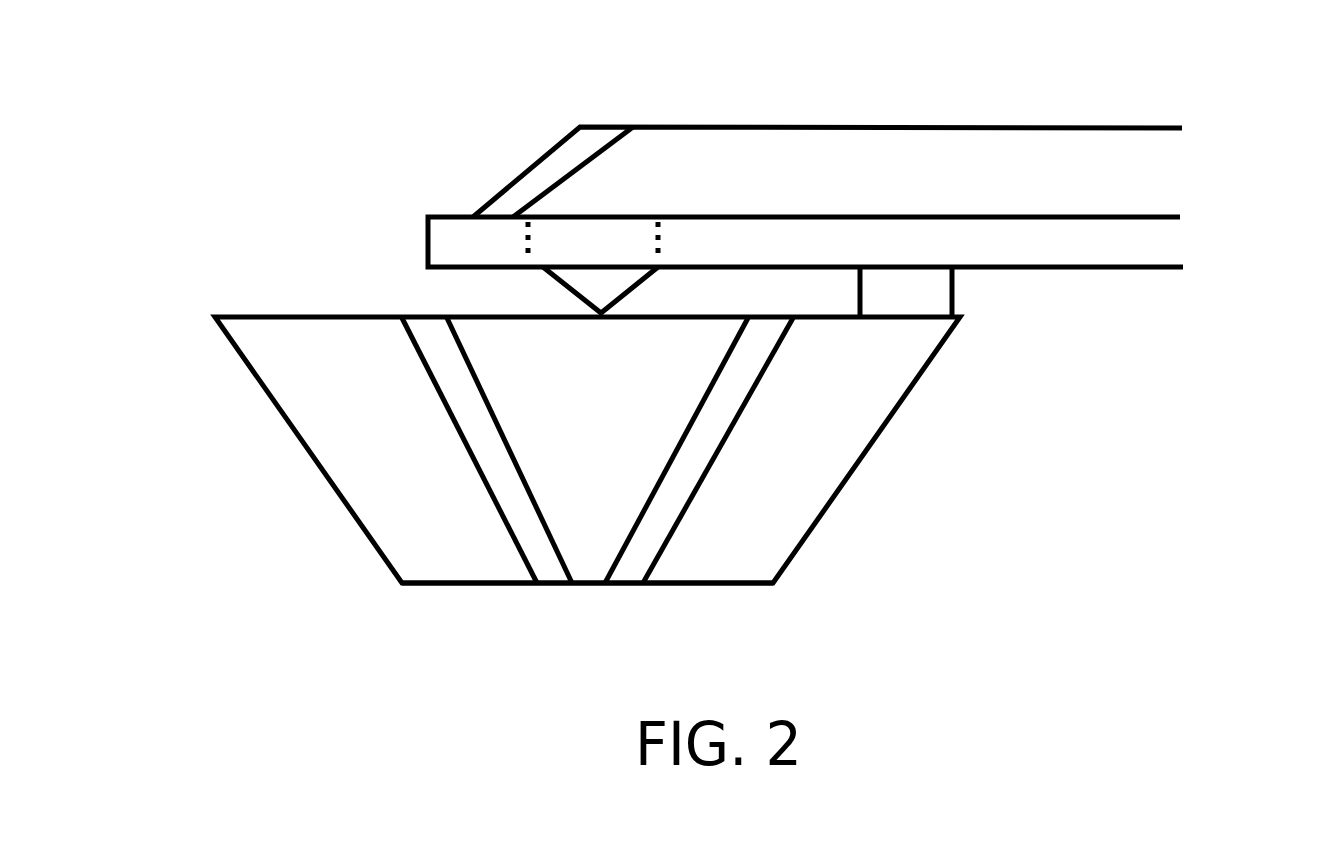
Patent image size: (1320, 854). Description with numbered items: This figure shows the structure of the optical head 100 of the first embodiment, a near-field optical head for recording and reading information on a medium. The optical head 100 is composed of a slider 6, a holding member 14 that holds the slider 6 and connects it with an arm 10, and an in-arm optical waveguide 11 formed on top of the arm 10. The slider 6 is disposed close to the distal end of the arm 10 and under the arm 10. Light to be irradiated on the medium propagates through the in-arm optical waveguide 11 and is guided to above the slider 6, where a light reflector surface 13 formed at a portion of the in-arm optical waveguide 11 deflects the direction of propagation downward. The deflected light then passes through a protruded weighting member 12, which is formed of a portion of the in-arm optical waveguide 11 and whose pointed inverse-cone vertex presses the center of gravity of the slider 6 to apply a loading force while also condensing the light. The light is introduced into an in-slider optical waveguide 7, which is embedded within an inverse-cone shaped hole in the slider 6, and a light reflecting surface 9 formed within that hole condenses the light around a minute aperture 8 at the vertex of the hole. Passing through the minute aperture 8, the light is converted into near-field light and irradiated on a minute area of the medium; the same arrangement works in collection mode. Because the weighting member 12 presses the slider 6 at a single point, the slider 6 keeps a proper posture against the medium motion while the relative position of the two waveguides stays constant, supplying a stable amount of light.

The optical head 100 is at (698, 354).
The slider 6 is at (387, 477).
The in-slider optical waveguide 7 is at (602, 412).
The minute aperture 8 is at (590, 585).
The light reflecting surface 9 is at (662, 507).
The arm 10 is at (1102, 240).
The in-arm optical waveguide 11 is at (1045, 143).
The weighting member 12 is at (590, 288).
The light reflector surface 13 is at (527, 188).
The holding member 14 is at (927, 288).